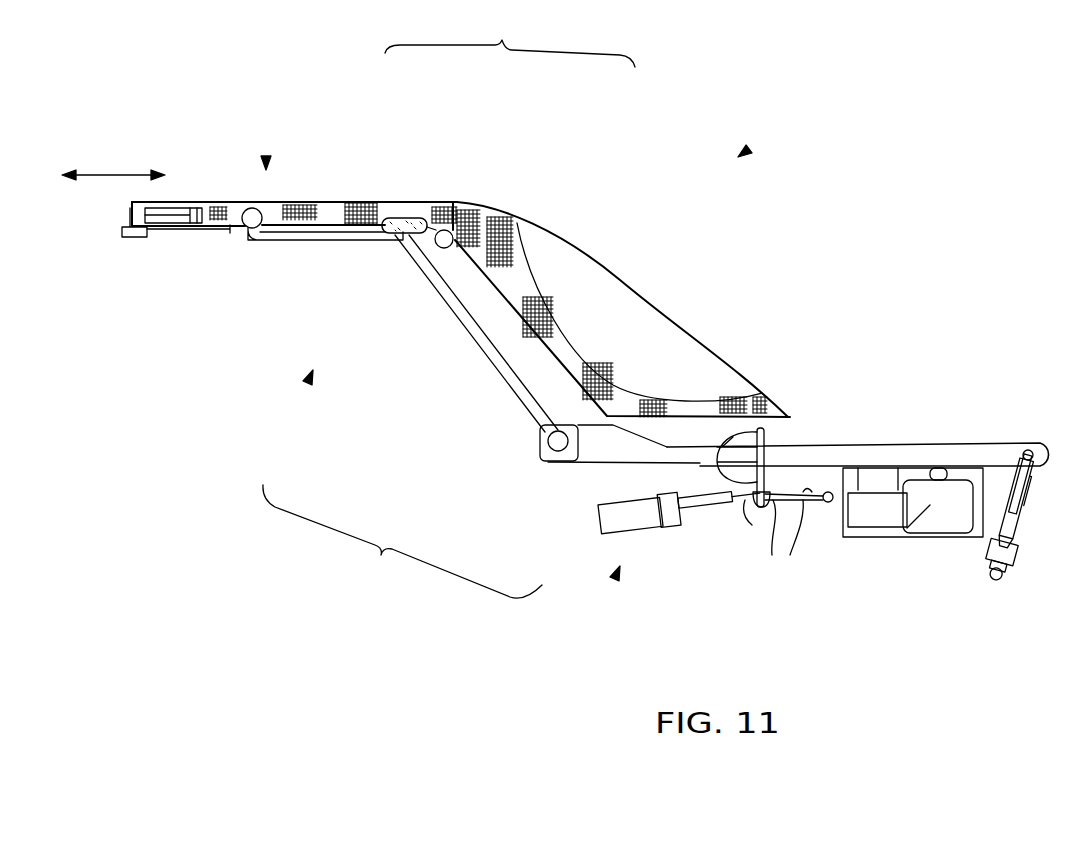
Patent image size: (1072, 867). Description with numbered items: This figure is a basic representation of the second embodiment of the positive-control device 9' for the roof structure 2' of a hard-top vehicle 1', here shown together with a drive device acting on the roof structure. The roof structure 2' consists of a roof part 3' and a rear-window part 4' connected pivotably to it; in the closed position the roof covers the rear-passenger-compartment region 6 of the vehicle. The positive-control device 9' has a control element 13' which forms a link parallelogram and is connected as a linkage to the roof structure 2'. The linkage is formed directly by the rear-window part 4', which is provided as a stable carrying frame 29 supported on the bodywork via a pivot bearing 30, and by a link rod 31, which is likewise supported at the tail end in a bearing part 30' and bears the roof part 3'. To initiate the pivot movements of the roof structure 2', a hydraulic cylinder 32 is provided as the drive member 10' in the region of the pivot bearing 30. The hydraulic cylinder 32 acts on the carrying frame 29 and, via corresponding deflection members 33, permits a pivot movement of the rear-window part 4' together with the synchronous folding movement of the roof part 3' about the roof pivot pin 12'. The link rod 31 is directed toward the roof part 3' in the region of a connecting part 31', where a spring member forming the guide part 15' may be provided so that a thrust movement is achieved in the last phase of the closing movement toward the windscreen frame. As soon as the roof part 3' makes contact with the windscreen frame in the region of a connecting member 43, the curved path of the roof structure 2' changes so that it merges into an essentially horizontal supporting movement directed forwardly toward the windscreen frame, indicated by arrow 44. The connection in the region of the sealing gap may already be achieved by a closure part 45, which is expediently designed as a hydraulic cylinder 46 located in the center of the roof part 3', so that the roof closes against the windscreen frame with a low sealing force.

The hard-top vehicle 1' is at (778, 114).
The roof structure 2' is at (510, 41).
The roof part 3' is at (460, 279).
The rear-window part 4' is at (611, 312).
The rear-passenger-compartment region 6 is at (220, 414).
The positive-control device 9' is at (402, 541).
The drive member 10' is at (578, 619).
The roof pivot pin 12' is at (478, 202).
The control element 13' is at (260, 421).
The guide part 15' is at (271, 120).
The carrying frame 29 is at (572, 340).
The pivot bearing 30 is at (780, 453).
The bearing part 30' is at (544, 478).
The link rod 31 is at (475, 333).
The connecting part 31' is at (300, 191).
The hydraulic cylinder 32 is at (667, 527).
The deflection members 33 is at (747, 505).
The connecting member 43 is at (134, 231).
The arrow 44 is at (118, 174).
The closure part 45 is at (188, 190).
The hydraulic cylinder 46 is at (193, 229).